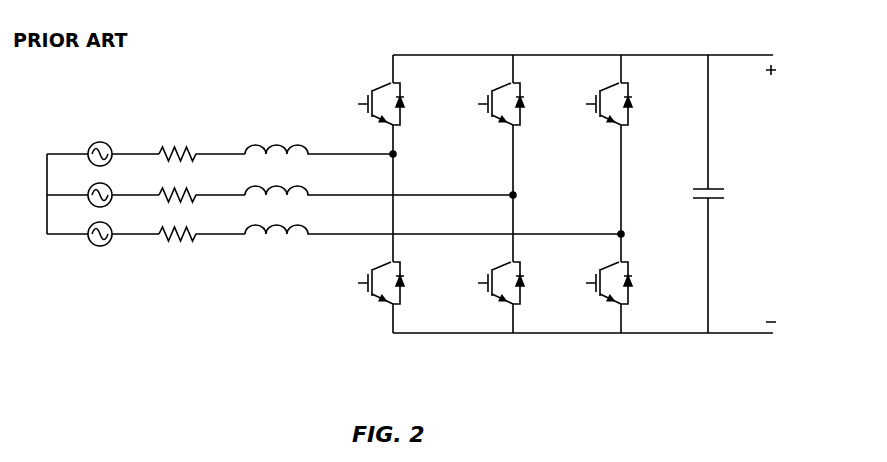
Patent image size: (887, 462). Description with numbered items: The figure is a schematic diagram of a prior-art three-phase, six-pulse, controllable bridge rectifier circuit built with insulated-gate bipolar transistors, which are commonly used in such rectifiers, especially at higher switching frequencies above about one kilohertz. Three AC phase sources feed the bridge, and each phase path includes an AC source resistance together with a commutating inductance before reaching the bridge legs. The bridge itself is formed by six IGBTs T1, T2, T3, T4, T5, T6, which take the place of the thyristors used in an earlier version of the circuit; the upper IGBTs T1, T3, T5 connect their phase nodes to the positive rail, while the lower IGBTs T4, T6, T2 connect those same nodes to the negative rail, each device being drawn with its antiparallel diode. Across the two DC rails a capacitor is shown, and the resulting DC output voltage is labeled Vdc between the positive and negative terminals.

The IGBT T1 is at (396, 108).
The IGBT T2 is at (624, 284).
The IGBT T3 is at (516, 108).
The IGBT T4 is at (396, 284).
The IGBT T5 is at (624, 108).
The IGBT T6 is at (516, 284).
The DC link capacitor voltage Vdc is at (734, 194).